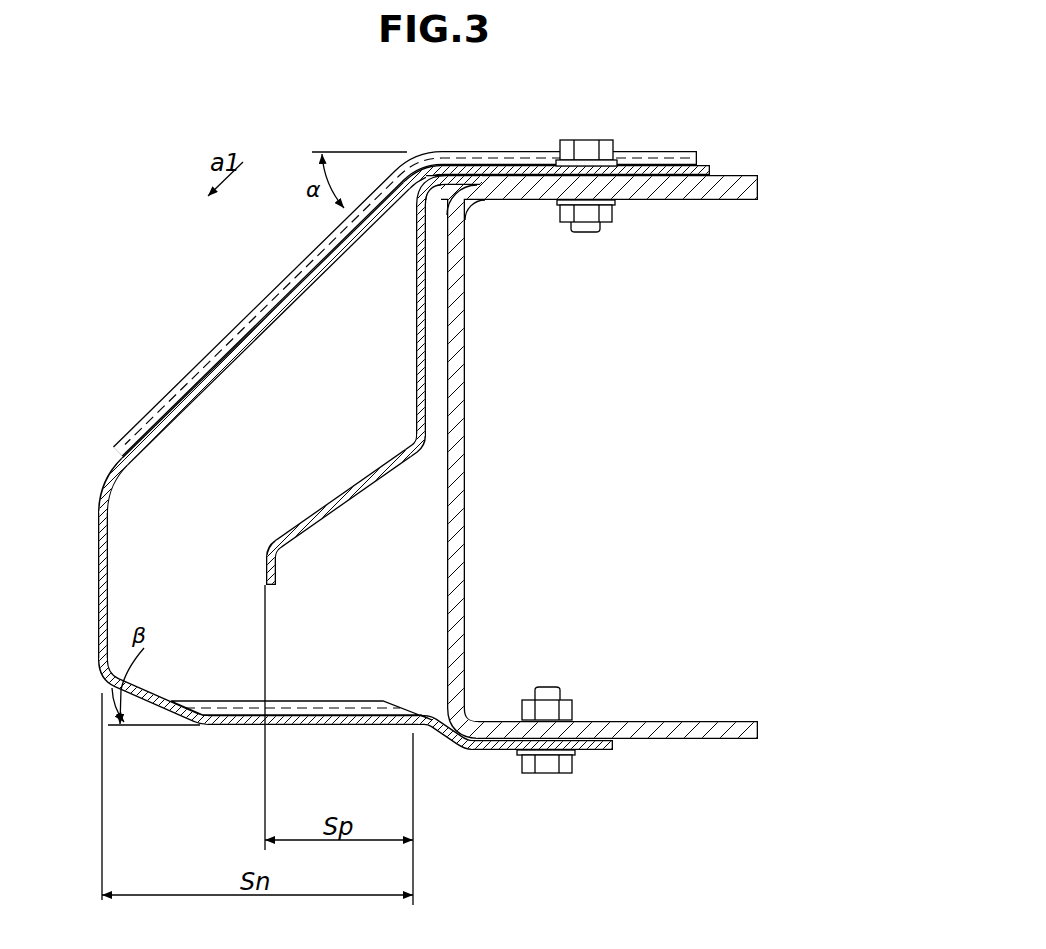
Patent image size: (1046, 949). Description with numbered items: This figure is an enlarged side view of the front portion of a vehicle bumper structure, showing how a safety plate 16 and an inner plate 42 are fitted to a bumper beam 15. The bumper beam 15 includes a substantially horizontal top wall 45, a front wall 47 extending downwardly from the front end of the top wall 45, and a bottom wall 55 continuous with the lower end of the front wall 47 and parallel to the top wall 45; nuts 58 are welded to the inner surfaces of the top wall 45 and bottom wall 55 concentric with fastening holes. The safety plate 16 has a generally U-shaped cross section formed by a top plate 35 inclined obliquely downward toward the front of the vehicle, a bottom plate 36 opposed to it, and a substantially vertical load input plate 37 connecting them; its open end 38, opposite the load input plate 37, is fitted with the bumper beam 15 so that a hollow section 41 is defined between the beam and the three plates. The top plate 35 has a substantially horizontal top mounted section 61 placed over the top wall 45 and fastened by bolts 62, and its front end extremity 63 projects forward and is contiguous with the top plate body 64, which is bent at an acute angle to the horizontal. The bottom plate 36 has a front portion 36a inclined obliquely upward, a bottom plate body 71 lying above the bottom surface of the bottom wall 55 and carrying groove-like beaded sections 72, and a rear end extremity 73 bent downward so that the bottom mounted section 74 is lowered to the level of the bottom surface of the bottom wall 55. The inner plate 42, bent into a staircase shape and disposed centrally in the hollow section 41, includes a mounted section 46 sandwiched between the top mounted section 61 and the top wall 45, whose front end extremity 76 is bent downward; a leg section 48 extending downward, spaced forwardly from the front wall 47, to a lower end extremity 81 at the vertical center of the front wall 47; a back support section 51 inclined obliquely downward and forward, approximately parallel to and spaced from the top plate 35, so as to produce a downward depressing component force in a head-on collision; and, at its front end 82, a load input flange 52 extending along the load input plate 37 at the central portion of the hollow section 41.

The bumper beam 15 is at (740, 174).
The safety plate 16 is at (200, 287).
The top plate 35 is at (193, 365).
The bottom plate 36 is at (215, 727).
The front portion 36a is at (138, 700).
The load input plate 37 is at (97, 562).
The open end 38 is at (697, 164).
The hollow section 41 is at (205, 472).
The inner plate 42 is at (333, 362).
The top wall 45 is at (671, 201).
The mounted section 46 is at (712, 177).
The front wall 47 is at (466, 322).
The leg section 48 is at (418, 347).
The back support section 51 is at (357, 497).
The load input flange 52 is at (262, 572).
The bottom wall 55 is at (676, 740).
The nut 58 is at (613, 207).
The top mounted section 61 is at (510, 165).
The bolt 62 is at (588, 139).
The front end extremity 63 is at (407, 170).
The top plate body 64 is at (245, 315).
The bottom plate body 71 is at (325, 727).
The beaded section 72 is at (350, 700).
The rear end extremity 73 is at (430, 732).
The bottom mounted section 74 is at (500, 751).
The front end extremity 76 is at (418, 196).
The lower end extremity 81 is at (413, 443).
The front end 82 is at (266, 548).